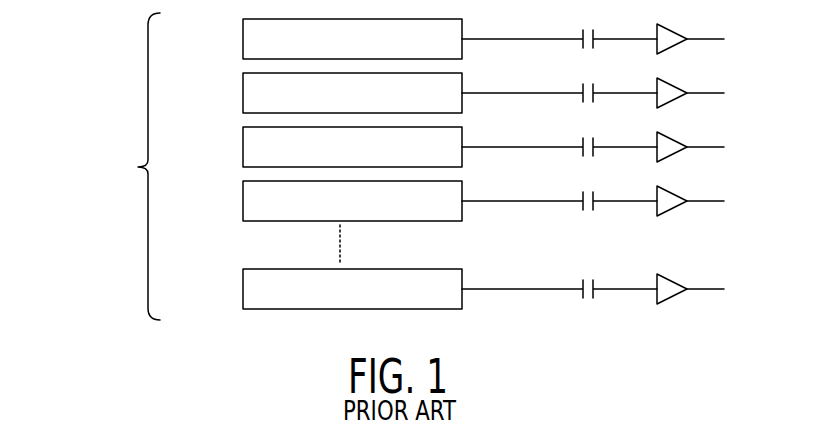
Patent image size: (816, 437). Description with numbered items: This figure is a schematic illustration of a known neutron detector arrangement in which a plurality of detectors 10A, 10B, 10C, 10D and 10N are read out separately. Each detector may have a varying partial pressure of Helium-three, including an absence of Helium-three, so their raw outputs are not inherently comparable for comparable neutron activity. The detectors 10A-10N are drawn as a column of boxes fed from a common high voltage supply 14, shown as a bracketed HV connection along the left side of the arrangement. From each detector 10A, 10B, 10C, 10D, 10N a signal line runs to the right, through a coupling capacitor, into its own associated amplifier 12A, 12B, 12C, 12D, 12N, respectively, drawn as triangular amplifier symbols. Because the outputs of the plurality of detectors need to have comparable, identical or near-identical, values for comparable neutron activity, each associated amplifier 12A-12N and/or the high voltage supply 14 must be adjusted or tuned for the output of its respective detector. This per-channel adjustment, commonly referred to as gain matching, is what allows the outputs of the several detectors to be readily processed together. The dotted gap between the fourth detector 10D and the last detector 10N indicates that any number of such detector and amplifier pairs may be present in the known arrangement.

The detector 10A is at (243, 39).
The detector 10B is at (243, 93).
The detector 10C is at (243, 147).
The detector 10D is at (243, 201).
The detector 10N is at (243, 289).
The amplifier 12A is at (672, 30).
The amplifier 12B is at (672, 84).
The amplifier 12C is at (672, 138).
The amplifier 12D is at (672, 192).
The amplifier 12N is at (672, 280).
The high voltage supply 14 is at (108, 166).